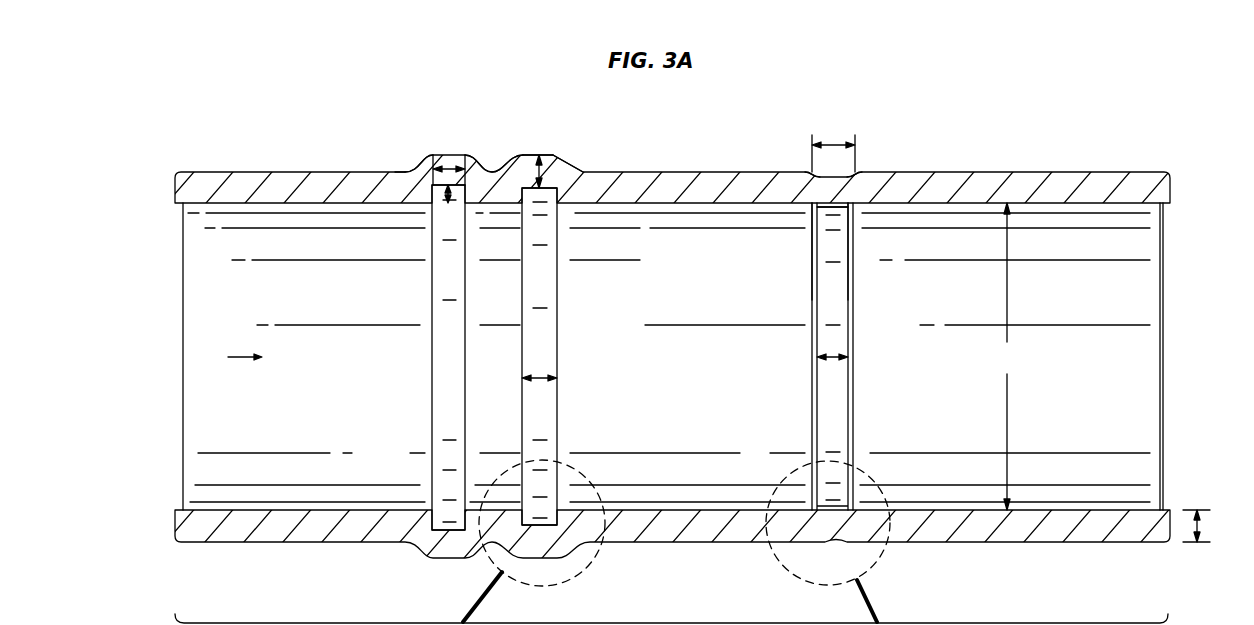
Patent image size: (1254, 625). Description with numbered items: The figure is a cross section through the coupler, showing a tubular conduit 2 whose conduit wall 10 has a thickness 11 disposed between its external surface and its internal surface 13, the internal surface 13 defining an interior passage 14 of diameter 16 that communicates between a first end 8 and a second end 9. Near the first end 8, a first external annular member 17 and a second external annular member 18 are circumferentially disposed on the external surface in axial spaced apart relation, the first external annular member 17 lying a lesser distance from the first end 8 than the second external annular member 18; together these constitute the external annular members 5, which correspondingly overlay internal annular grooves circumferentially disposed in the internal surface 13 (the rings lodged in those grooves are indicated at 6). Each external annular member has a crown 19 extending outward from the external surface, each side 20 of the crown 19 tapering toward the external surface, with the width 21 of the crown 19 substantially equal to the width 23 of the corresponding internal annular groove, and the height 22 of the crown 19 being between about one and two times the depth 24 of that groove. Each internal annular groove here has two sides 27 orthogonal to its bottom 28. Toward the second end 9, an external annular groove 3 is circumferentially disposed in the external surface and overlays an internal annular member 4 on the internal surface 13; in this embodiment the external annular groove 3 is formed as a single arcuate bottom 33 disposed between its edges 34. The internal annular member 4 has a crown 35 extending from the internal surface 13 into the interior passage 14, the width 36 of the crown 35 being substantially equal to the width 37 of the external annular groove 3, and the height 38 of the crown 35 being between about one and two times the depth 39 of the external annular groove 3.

The tubular conduit 2 is at (655, 356).
The external annular groove 3 is at (834, 541).
The internal annular member 4 is at (833, 414).
The external annular member 5 is at (519, 155).
The second ring 6 is at (453, 345).
The first end 8 is at (176, 250).
The second end 9 is at (1170, 258).
The conduit wall 10 is at (1110, 532).
The thickness 11 is at (1213, 526).
The internal surface 13 is at (696, 412).
The interior passage 14 is at (225, 383).
The diameter 16 is at (1009, 356).
The first external annular member 17 is at (430, 156).
The second external annular member 18 is at (549, 157).
The crown 19 is at (534, 157).
The side 20 is at (412, 170).
The width 21 is at (443, 160).
The height 22 is at (553, 160).
The width 23 is at (538, 378).
The depth 24 is at (432, 195).
The sides 27 is at (395, 401).
The bottom 28 is at (437, 440).
The arcuate bottom 33 is at (818, 175).
The edges 34 is at (850, 177).
The crown 35 is at (833, 212).
The width 36 is at (832, 358).
The width 37 is at (836, 142).
The height 38 is at (809, 204).
The depth 39 is at (852, 195).